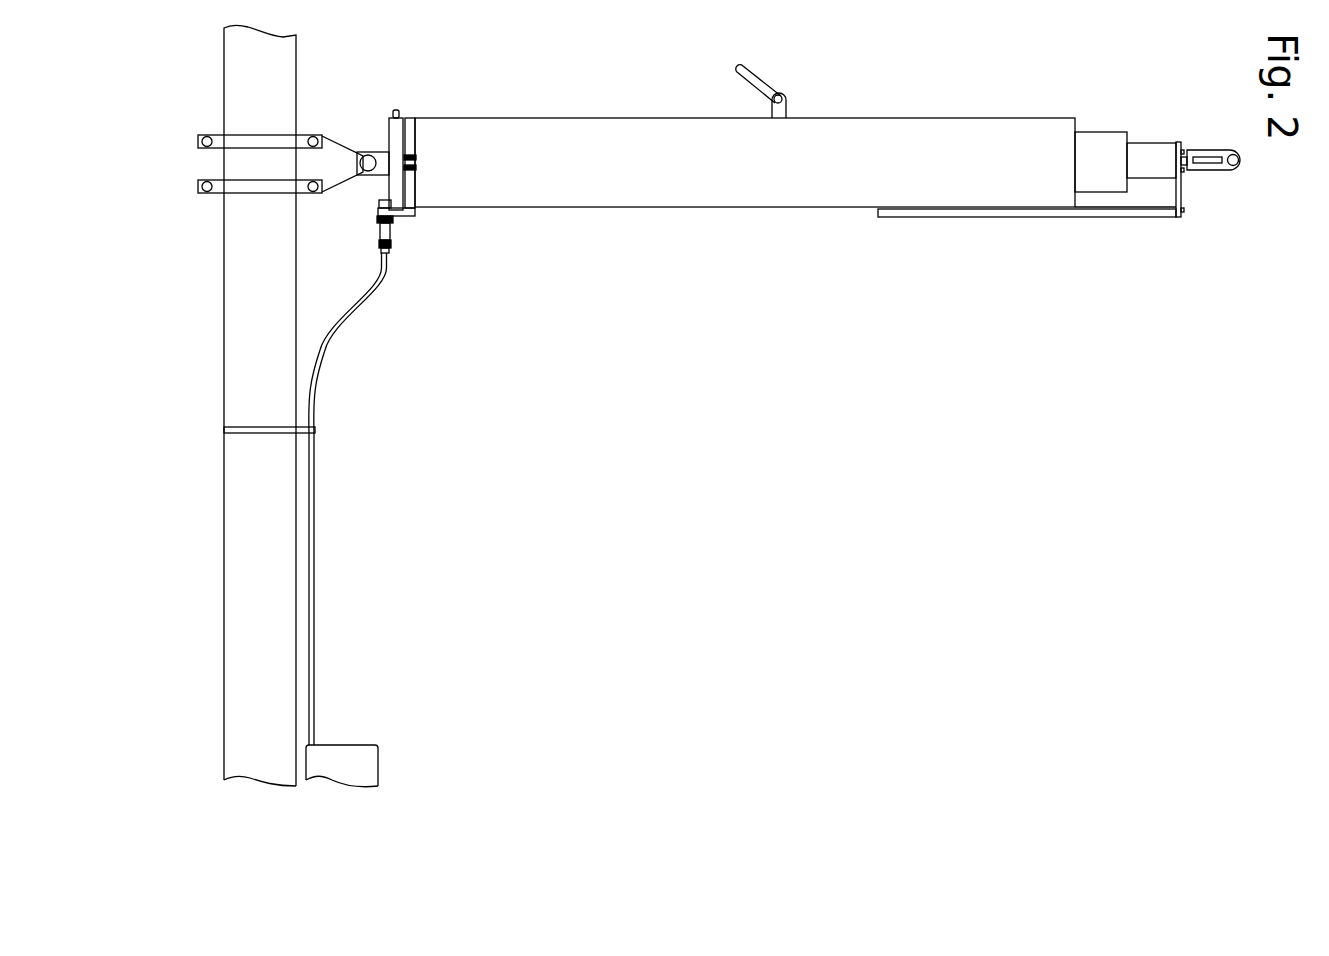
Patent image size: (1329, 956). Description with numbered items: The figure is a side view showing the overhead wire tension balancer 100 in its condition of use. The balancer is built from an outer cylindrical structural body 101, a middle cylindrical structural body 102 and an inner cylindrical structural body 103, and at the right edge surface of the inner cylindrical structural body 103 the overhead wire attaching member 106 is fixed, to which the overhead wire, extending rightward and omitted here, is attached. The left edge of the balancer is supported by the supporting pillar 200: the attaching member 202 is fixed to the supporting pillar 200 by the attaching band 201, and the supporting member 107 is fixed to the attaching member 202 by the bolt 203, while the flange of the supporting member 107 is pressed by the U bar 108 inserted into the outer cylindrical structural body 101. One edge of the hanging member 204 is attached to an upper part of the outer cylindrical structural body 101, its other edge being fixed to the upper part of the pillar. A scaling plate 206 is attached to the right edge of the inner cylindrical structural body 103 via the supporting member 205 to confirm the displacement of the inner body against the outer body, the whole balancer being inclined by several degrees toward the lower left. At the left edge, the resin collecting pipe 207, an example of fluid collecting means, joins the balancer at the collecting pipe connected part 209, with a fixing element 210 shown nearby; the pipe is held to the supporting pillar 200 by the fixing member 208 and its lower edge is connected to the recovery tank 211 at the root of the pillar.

The overhead wire tension balancer 100 is at (790, 157).
The outer cylindrical structural body 101 is at (703, 195).
The middle cylindrical structural body 102 is at (1095, 148).
The inner cylindrical structural body 103 is at (1149, 158).
The overhead wire attaching member 106 is at (1202, 150).
The supporting member 107 is at (380, 152).
The U bar 108 is at (397, 110).
The supporting pillar 200 is at (240, 298).
The attaching band 201 is at (200, 134).
The attaching member 202 is at (340, 175).
The bolt 203 is at (360, 153).
The hanging member 204 is at (753, 78).
The supporting member 205 is at (1178, 192).
The scaling plate 206 is at (1117, 213).
The collecting pipe 207 is at (323, 350).
The fixing member 208 is at (258, 428).
The collecting pipe connected part 209 is at (397, 228).
The fixing plate 210 is at (412, 193).
The recovery tank 211 is at (368, 768).